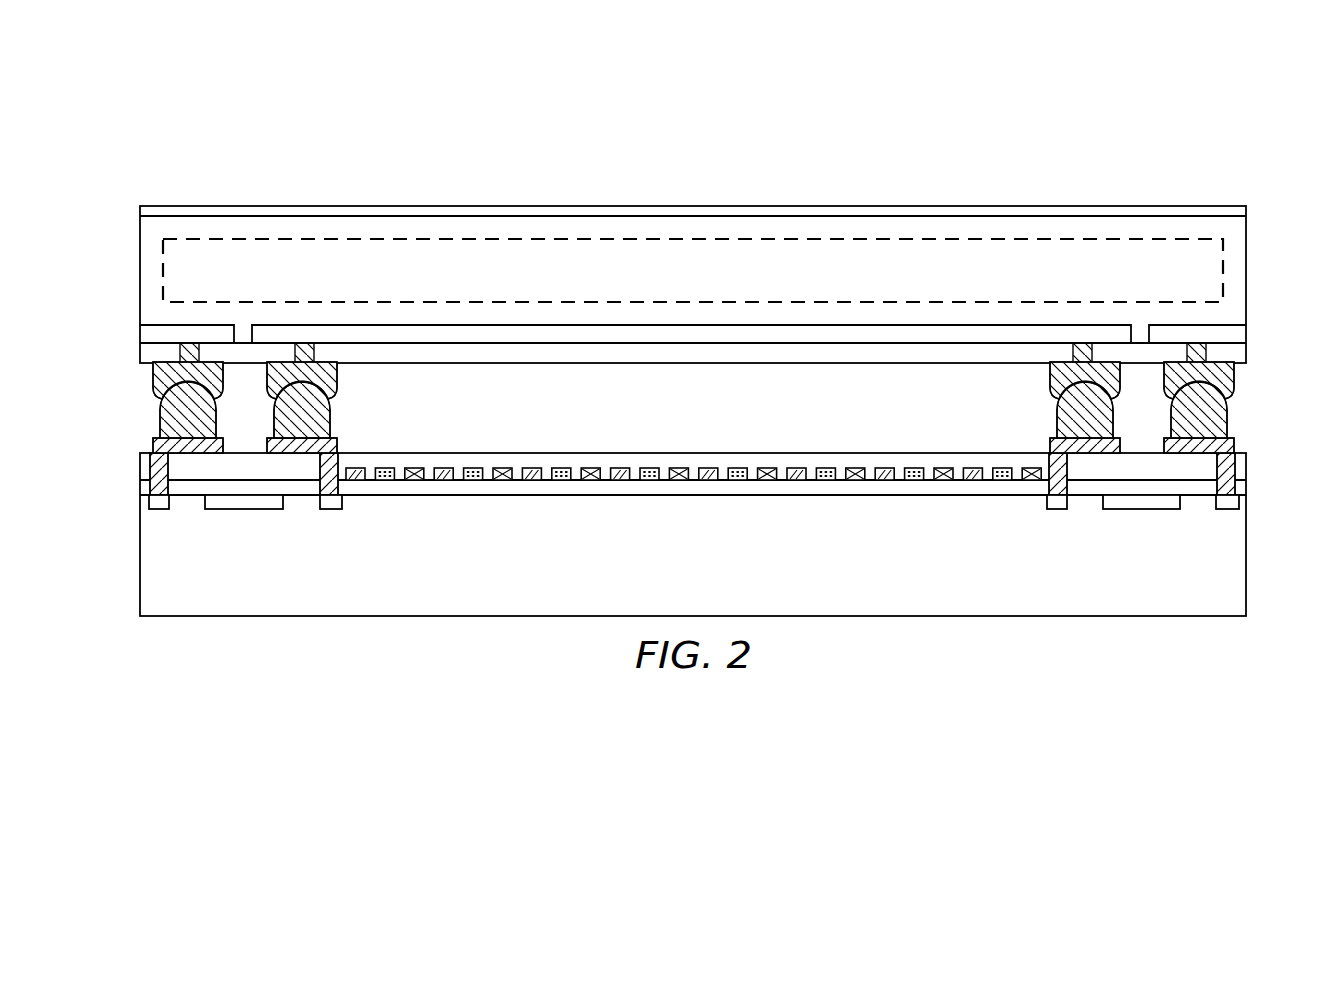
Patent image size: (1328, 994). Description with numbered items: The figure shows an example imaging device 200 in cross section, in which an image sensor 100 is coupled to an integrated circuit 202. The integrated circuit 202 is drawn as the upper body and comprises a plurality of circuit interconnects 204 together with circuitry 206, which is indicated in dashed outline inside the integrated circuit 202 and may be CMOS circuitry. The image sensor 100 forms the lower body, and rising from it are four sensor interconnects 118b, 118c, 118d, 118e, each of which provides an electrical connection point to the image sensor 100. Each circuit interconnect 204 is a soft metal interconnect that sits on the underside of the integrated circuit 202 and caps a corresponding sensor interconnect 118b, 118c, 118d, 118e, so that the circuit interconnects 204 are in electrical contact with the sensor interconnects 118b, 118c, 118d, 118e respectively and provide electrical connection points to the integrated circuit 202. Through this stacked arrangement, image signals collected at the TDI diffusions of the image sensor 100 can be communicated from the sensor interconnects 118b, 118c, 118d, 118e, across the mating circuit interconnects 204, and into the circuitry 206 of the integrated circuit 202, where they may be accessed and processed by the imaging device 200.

The imaging device 200 is at (485, 118).
The integrated circuit 202 is at (728, 259).
The circuitry 206 is at (693, 240).
The circuit interconnect 204 is at (152, 372).
The sensor interconnect 118b is at (158, 410).
The sensor interconnect 118c is at (330, 418).
The sensor interconnect 118d is at (1057, 412).
The sensor interconnect 118e is at (1225, 425).
The image sensor 100 is at (130, 397).